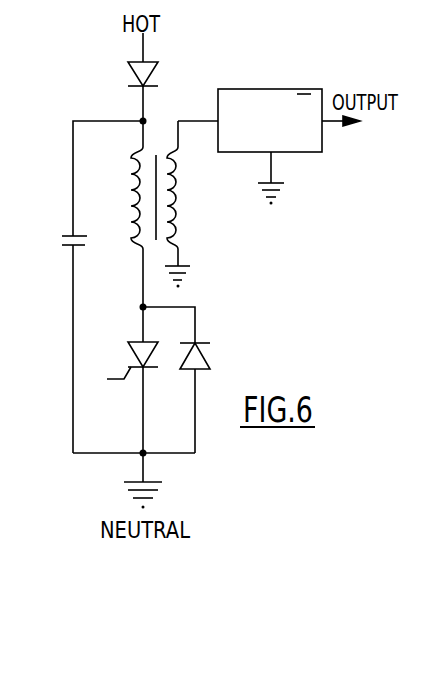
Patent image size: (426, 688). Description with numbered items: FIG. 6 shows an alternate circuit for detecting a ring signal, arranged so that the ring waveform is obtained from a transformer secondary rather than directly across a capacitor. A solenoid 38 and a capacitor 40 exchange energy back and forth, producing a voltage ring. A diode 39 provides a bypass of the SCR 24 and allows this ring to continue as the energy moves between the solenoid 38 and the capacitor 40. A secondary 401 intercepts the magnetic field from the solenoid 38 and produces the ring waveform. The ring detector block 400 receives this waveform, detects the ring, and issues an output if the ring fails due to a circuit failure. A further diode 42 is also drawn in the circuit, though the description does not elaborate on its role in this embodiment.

The diode 42 is at (155, 68).
The solenoid 38 is at (131, 172).
The capacitor 40 is at (78, 234).
The secondary 401 is at (181, 212).
The ring detector block 400 is at (287, 89).
The SCR 24 is at (138, 337).
The diode 39 is at (206, 350).